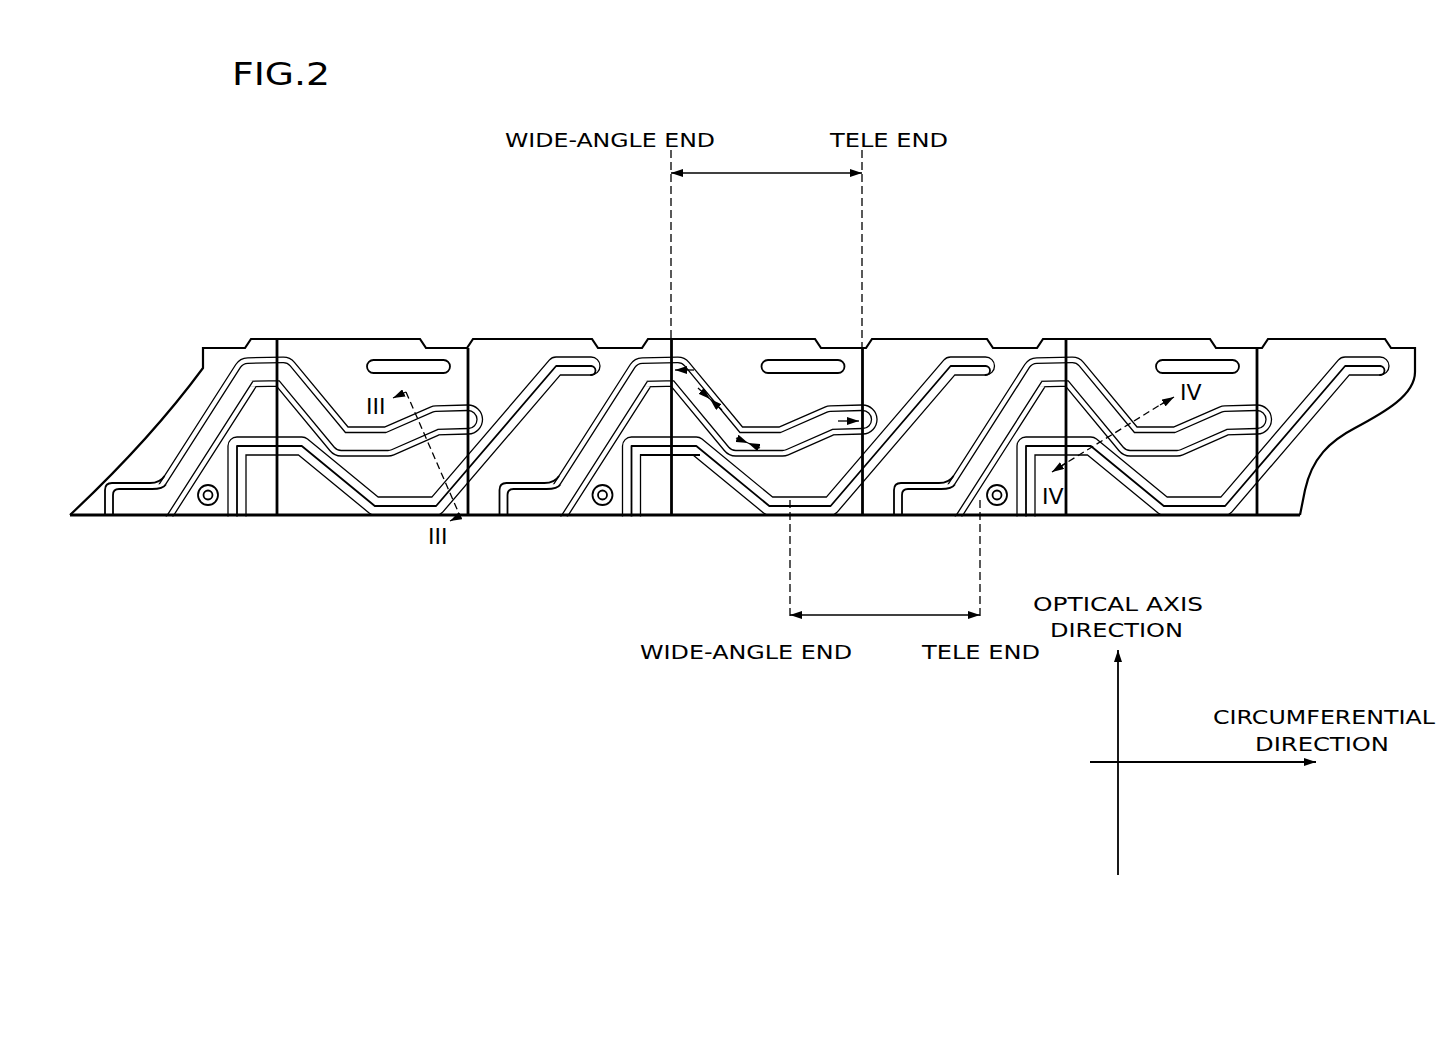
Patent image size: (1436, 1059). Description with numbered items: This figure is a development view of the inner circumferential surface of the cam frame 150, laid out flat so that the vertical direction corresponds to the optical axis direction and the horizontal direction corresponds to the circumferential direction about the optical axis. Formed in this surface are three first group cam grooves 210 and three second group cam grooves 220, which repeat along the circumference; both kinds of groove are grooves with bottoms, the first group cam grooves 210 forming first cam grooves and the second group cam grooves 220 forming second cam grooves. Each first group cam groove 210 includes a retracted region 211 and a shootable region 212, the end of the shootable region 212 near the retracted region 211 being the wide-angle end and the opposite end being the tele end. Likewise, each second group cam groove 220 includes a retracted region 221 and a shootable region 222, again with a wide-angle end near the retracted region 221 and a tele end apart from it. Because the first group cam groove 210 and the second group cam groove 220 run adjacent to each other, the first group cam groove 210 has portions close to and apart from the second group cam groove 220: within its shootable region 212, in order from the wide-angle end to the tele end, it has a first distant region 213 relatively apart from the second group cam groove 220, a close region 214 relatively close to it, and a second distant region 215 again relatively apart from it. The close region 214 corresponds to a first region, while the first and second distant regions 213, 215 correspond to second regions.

The cam frame 150 is at (1048, 196).
The first group cam groove 210 is at (214, 397).
The retracted region 211 is at (525, 502).
The shootable region 212 is at (766, 244).
The first distant region 213 is at (698, 369).
The close region 214 is at (746, 440).
The second distant region 215 is at (830, 421).
The second group cam groove 220 is at (527, 380).
The retracted region 221 is at (683, 455).
The shootable region 222 is at (885, 560).